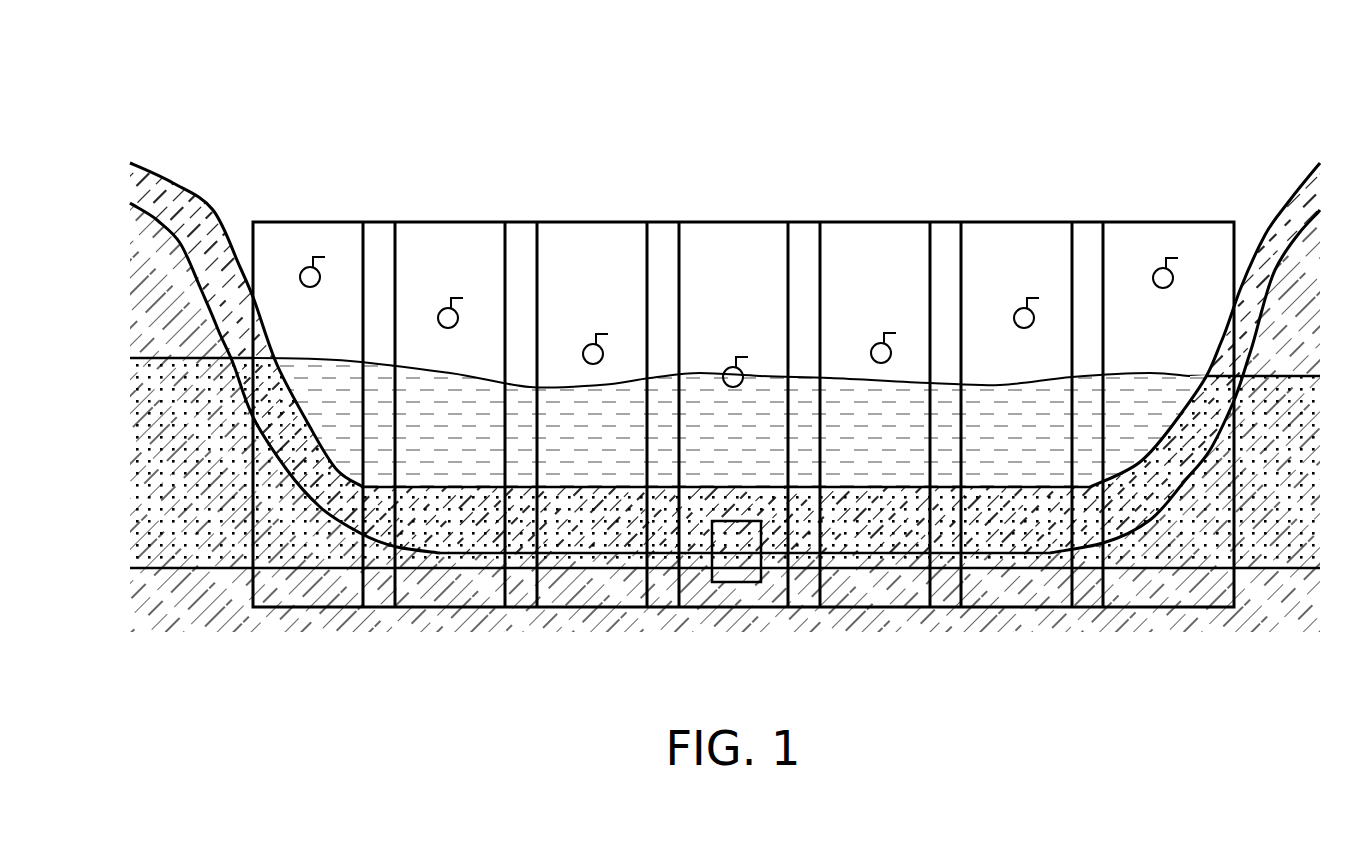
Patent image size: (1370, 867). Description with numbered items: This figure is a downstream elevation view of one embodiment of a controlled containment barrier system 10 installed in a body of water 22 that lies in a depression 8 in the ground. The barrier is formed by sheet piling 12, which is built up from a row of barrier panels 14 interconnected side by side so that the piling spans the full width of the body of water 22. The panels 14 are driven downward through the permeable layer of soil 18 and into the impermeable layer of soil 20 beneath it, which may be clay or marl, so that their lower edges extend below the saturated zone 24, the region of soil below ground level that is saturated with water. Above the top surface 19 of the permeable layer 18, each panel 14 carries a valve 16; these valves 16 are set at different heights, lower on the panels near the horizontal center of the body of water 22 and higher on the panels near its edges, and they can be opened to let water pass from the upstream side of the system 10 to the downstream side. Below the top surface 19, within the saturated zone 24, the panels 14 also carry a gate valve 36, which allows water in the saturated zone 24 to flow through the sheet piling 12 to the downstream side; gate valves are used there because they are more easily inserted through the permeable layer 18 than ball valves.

The depression 8 is at (1105, 154).
The controlled containment barrier system 10 is at (560, 111).
The sheet piling 12 is at (857, 190).
The barrier panels 14 is at (343, 237).
The valve 16 is at (303, 268).
The permeable layer of soil 18 is at (200, 220).
The top surface 19 is at (606, 495).
The impermeable layer of soil 20 is at (140, 243).
The body of water 22 is at (482, 388).
The saturated zone 24 is at (297, 550).
The gate valve 36 is at (727, 580).